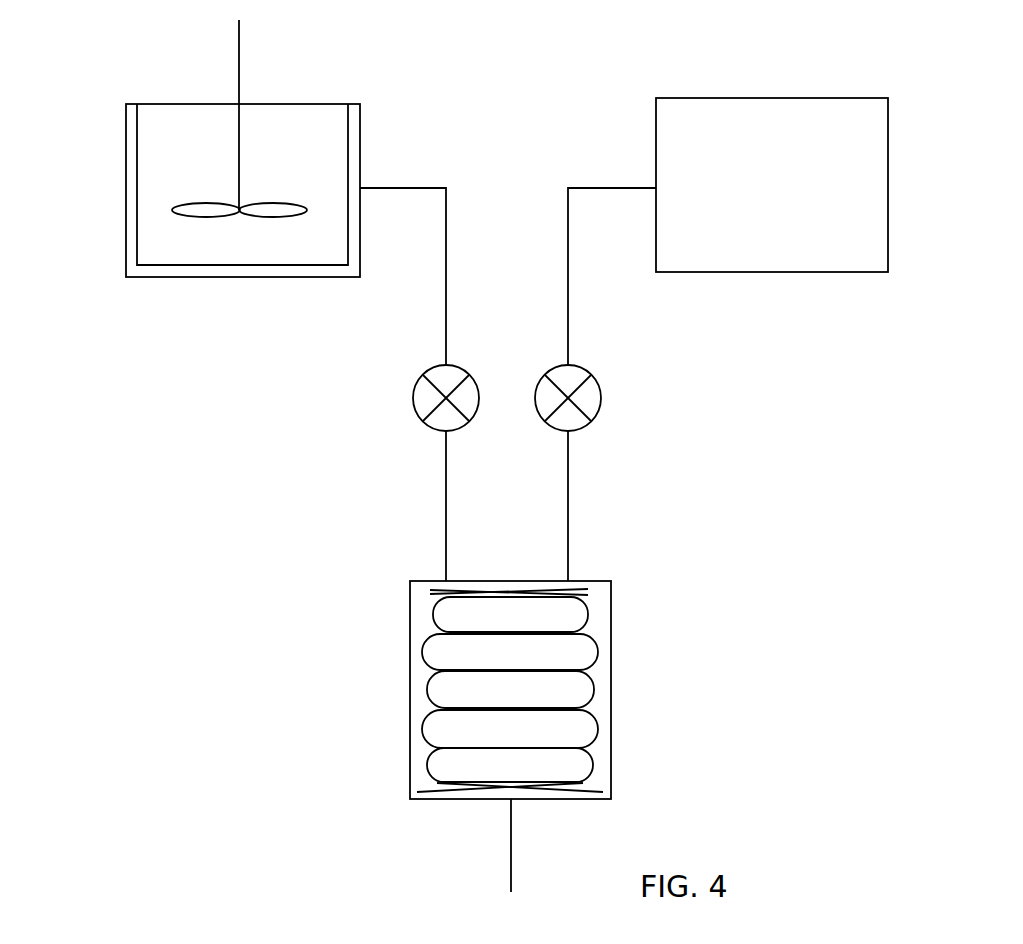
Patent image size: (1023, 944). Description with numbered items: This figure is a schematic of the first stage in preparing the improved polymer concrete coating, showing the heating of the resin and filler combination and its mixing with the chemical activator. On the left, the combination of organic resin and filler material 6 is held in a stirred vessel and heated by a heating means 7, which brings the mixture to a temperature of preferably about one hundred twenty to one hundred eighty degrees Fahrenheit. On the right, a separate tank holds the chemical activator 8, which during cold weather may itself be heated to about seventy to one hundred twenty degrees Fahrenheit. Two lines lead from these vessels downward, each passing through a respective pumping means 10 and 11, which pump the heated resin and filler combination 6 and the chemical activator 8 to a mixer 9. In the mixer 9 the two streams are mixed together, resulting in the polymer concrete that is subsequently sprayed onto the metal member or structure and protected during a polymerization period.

The combination of organic resin and filler material 6 is at (205, 142).
The heating means 7 is at (126, 243).
The chemical activator 8 is at (870, 197).
The mixer 9 is at (603, 698).
The pumping means 10 is at (413, 407).
The pumping means 11 is at (602, 413).